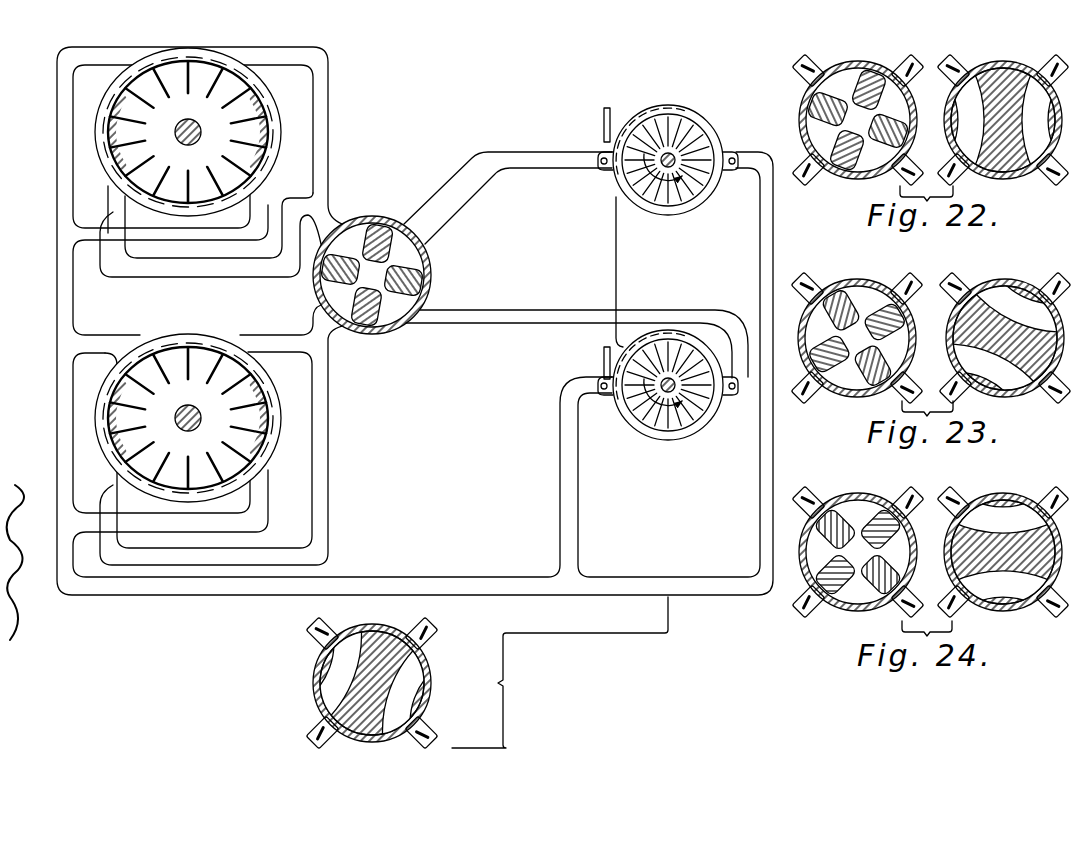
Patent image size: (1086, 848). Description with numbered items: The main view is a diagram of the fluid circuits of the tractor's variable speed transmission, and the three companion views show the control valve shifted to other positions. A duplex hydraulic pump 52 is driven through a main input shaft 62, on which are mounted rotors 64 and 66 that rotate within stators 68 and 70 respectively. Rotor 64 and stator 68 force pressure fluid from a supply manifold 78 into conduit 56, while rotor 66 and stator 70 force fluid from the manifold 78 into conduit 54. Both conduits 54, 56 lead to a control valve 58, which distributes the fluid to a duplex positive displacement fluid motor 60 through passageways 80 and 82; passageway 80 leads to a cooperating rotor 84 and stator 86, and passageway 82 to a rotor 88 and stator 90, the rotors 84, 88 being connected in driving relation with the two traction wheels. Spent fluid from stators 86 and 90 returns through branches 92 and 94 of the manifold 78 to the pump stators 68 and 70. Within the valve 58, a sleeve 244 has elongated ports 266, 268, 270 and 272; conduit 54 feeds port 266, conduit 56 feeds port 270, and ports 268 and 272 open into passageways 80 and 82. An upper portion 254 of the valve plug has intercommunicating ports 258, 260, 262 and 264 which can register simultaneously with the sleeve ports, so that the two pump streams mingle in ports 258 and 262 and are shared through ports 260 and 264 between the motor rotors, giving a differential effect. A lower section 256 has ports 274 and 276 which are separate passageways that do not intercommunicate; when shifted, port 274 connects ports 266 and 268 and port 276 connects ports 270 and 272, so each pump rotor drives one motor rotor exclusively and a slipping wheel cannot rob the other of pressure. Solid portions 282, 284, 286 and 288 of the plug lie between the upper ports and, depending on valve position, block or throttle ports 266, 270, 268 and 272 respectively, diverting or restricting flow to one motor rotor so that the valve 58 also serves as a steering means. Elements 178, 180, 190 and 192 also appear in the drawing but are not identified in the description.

In FIG. 21, the duplex hydraulic pump 52 is at (612, 276).
In FIG. 21, the conduit 54 is at (525, 155).
In FIG. 21, the conduit 56 is at (515, 323).
In FIG. 21, the control valve 58 is at (432, 254).
In FIG. 21, the duplex fluid motor 60 is at (110, 318).
In FIG. 21, the main input shaft 62 is at (680, 153).
In FIG. 21, the rotor 64 is at (655, 420).
In FIG. 21, the rotor 66 is at (662, 110).
In FIG. 21, the stator 68 is at (692, 434).
In FIG. 21, the stator 70 is at (683, 108).
In FIG. 21, the supply pipe or manifold 78 is at (762, 268).
In FIG. 21, the passageway 80 is at (322, 160).
In FIG. 21, the passageway 82 is at (322, 397).
In FIG. 21, the rotor 84 is at (237, 100).
In FIG. 21, the stator 86 is at (264, 114).
In FIG. 21, the rotor 88 is at (240, 392).
In FIG. 21, the stator 90 is at (262, 410).
In FIG. 21, the branch 92 is at (97, 240).
In FIG. 21, the branch 94 is at (88, 520).
In FIG. 21, the pin 178 is at (699, 121).
In FIG. 21, the pin 180 is at (650, 121).
In FIG. 21, the pin 190 is at (653, 415).
In FIG. 21, the pin 192 is at (708, 422).
In FIG. 21, the sleeve 244 is at (427, 283).
In FIG. 22, the upper portion 254 is at (852, 58).
In FIG. 22, the lower section 256 is at (1000, 58).
In FIG. 21, the port 258 is at (380, 222).
In FIG. 24, the port 258 is at (853, 507).
In FIG. 21, the port 260 is at (382, 218).
In FIG. 21, the port 262 is at (395, 313).
In FIG. 24, the port 262 is at (898, 517).
In FIG. 21, the port 264 is at (372, 322).
In FIG. 24, the port 264 is at (850, 597).
In FIG. 21, the port 266 is at (417, 226).
In FIG. 22, the port 266 is at (895, 77).
In FIG. 23, the port 266 is at (885, 290).
In FIG. 24, the port 266 is at (893, 513).
In FIG. 21, the port 268 is at (355, 227).
In FIG. 22, the port 268 is at (820, 77).
In FIG. 23, the port 268 is at (817, 297).
In FIG. 24, the port 268 is at (810, 517).
In FIG. 21, the port 270 is at (410, 313).
In FIG. 22, the port 270 is at (892, 172).
In FIG. 23, the port 270 is at (903, 370).
In FIG. 24, the port 270 is at (870, 600).
In FIG. 21, the port 272 is at (335, 313).
In FIG. 22, the port 272 is at (820, 180).
In FIG. 23, the port 272 is at (820, 390).
In FIG. 24, the port 272 is at (815, 590).
In FIG. 21, the port 274 is at (407, 677).
In FIG. 23, the port 274 is at (1003, 303).
In FIG. 24, the port 274 is at (1000, 523).
In FIG. 21, the port 276 is at (320, 705).
In FIG. 23, the port 276 is at (1017, 377).
In FIG. 24, the port 276 is at (1015, 580).
In FIG. 22, the solid portion 282 is at (905, 127).
In FIG. 23, the solid portion 282 is at (910, 313).
In FIG. 24, the solid portion 282 is at (877, 520).
In FIG. 22, the solid portion 284 is at (843, 160).
In FIG. 23, the solid portion 284 is at (865, 377).
In FIG. 24, the solid portion 284 is at (893, 575).
In FIG. 22, the solid portion 286 is at (867, 67).
In FIG. 23, the solid portion 286 is at (842, 293).
In FIG. 24, the solid portion 286 is at (820, 532).
In FIG. 22, the solid portion 288 is at (803, 107).
In FIG. 23, the solid portion 288 is at (810, 357).
In FIG. 24, the solid portion 288 is at (833, 583).